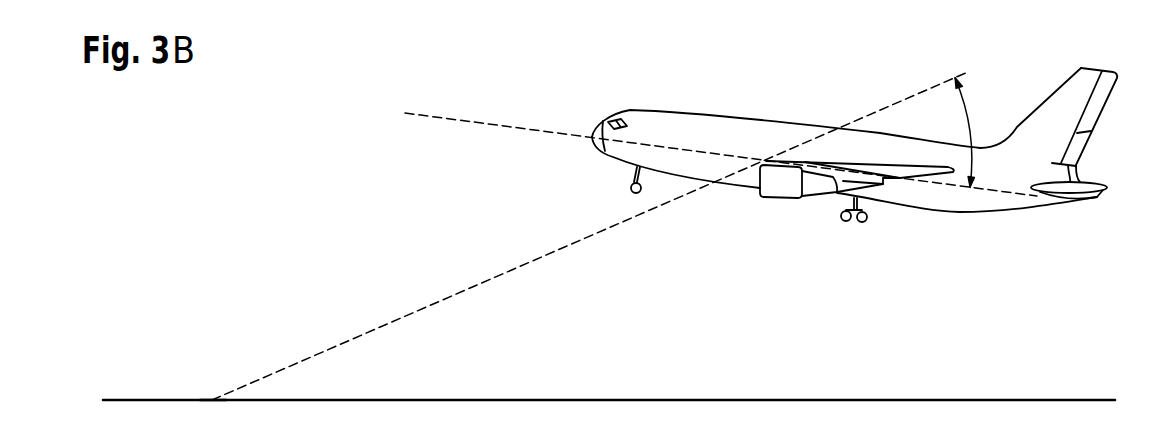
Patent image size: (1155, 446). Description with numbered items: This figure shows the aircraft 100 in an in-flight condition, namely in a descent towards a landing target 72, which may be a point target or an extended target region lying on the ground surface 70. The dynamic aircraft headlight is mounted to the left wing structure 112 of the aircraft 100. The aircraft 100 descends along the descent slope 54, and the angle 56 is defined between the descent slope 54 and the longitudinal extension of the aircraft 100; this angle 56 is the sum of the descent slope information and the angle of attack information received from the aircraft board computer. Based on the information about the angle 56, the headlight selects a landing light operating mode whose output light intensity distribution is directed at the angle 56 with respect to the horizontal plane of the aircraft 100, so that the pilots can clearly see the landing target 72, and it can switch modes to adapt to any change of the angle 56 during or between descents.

The aircraft 100 is at (783, 124).
The left wing structure 112 is at (903, 168).
The angle 56 is at (971, 128).
The descent slope 54 is at (470, 288).
The runway 70 is at (712, 400).
The landing target 72 is at (211, 400).